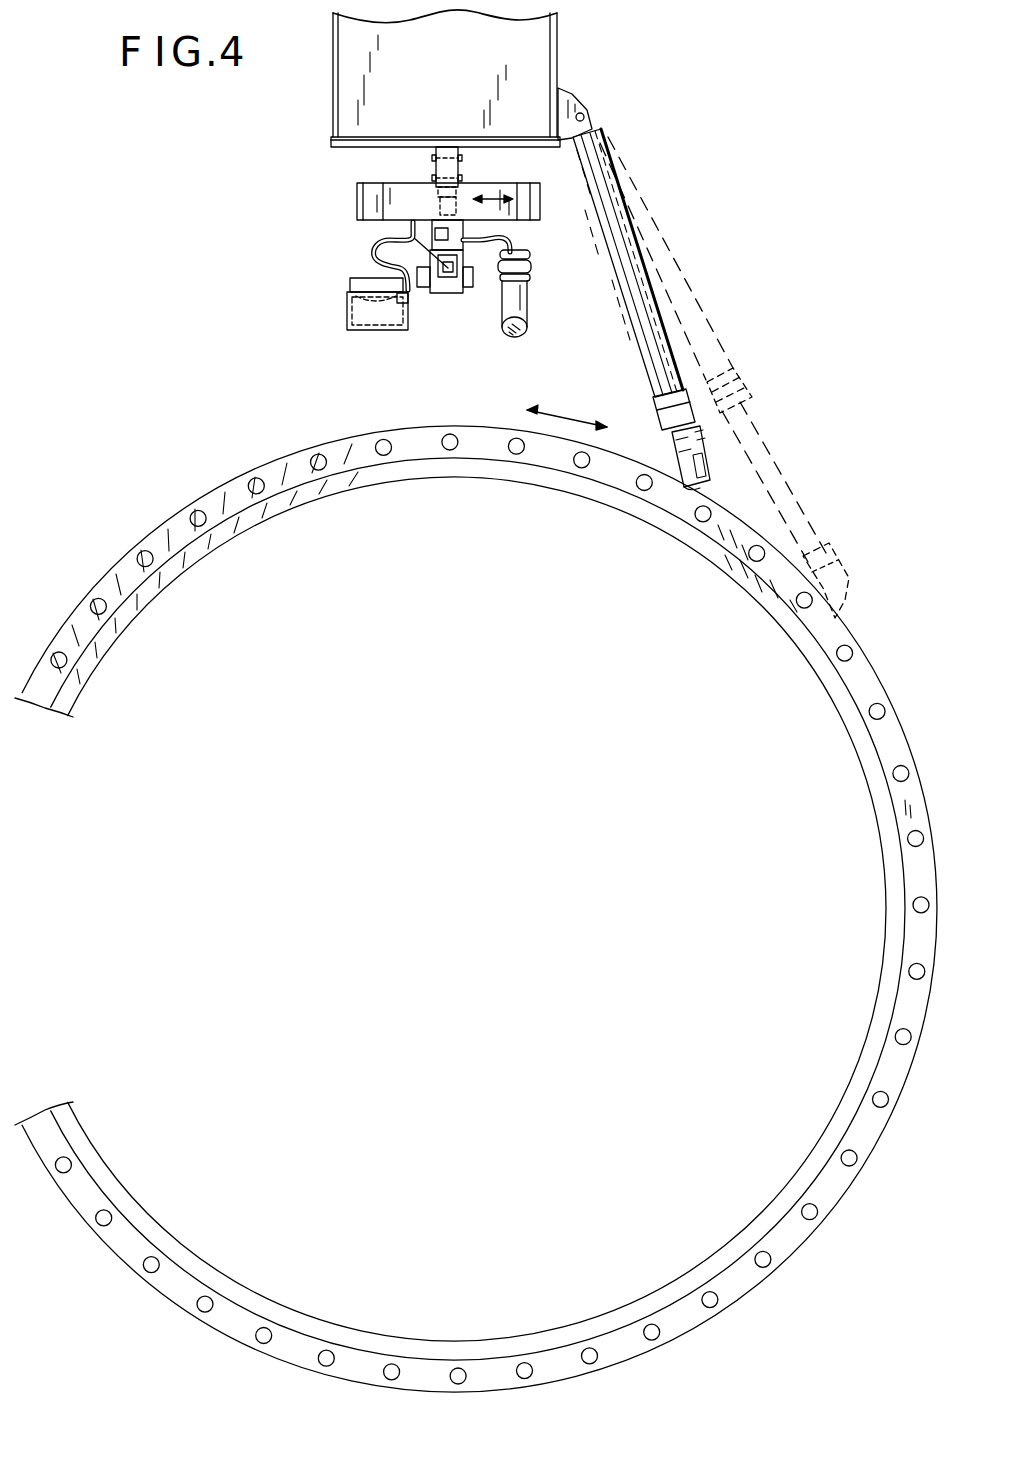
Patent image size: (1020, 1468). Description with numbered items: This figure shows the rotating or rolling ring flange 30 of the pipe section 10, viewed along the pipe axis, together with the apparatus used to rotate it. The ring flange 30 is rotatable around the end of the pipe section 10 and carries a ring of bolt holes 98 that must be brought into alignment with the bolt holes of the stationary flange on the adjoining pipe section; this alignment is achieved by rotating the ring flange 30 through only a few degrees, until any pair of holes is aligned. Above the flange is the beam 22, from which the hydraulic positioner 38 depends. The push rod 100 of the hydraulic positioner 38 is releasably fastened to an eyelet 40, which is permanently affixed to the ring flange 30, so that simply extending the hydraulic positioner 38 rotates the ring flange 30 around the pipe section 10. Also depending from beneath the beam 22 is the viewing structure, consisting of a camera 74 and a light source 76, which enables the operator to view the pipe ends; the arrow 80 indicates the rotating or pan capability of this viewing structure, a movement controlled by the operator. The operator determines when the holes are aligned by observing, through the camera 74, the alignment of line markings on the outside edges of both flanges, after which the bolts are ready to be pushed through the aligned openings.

The beam 22 is at (462, 83).
The arrow indicating rotating or pan capability 80 is at (498, 190).
The light source 76 is at (378, 333).
The camera 74 is at (530, 306).
The hydraulic positioner 38 is at (612, 201).
The push rod 100 is at (672, 437).
The eyelet 40 is at (703, 484).
The ring flange 30 is at (360, 438).
The pipe section 10 is at (273, 512).
The bolt holes 98 is at (249, 486).